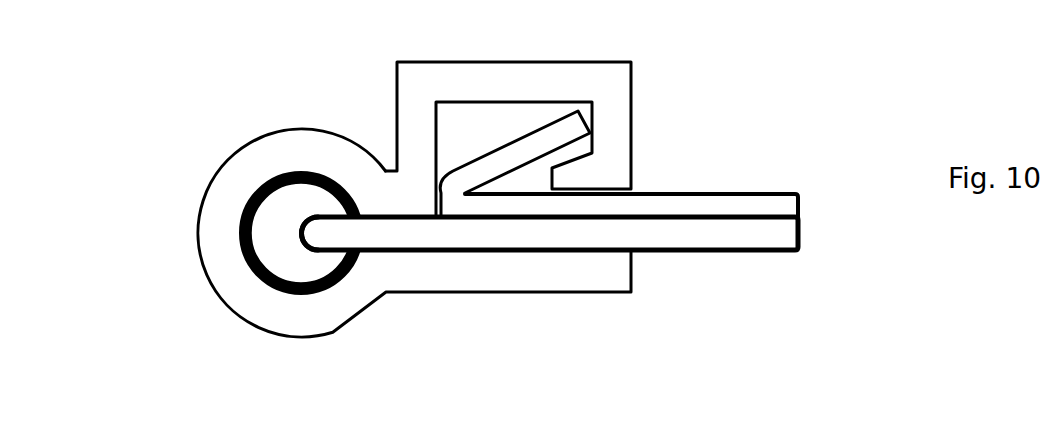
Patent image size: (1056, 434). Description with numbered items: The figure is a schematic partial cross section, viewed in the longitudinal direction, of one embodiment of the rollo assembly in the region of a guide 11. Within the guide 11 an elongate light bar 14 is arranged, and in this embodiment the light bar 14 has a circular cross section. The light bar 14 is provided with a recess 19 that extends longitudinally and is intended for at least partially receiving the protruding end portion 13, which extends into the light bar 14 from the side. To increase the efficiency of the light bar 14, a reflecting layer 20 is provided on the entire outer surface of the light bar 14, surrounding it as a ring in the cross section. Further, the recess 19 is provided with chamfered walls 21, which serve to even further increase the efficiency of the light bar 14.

The guide 11 is at (295, 128).
The protruding end portion 13 is at (728, 238).
The elongate light bar 14 is at (273, 240).
The recess 19 is at (299, 231).
The reflecting layer 20 is at (243, 200).
The chamfered walls 21 is at (305, 218).